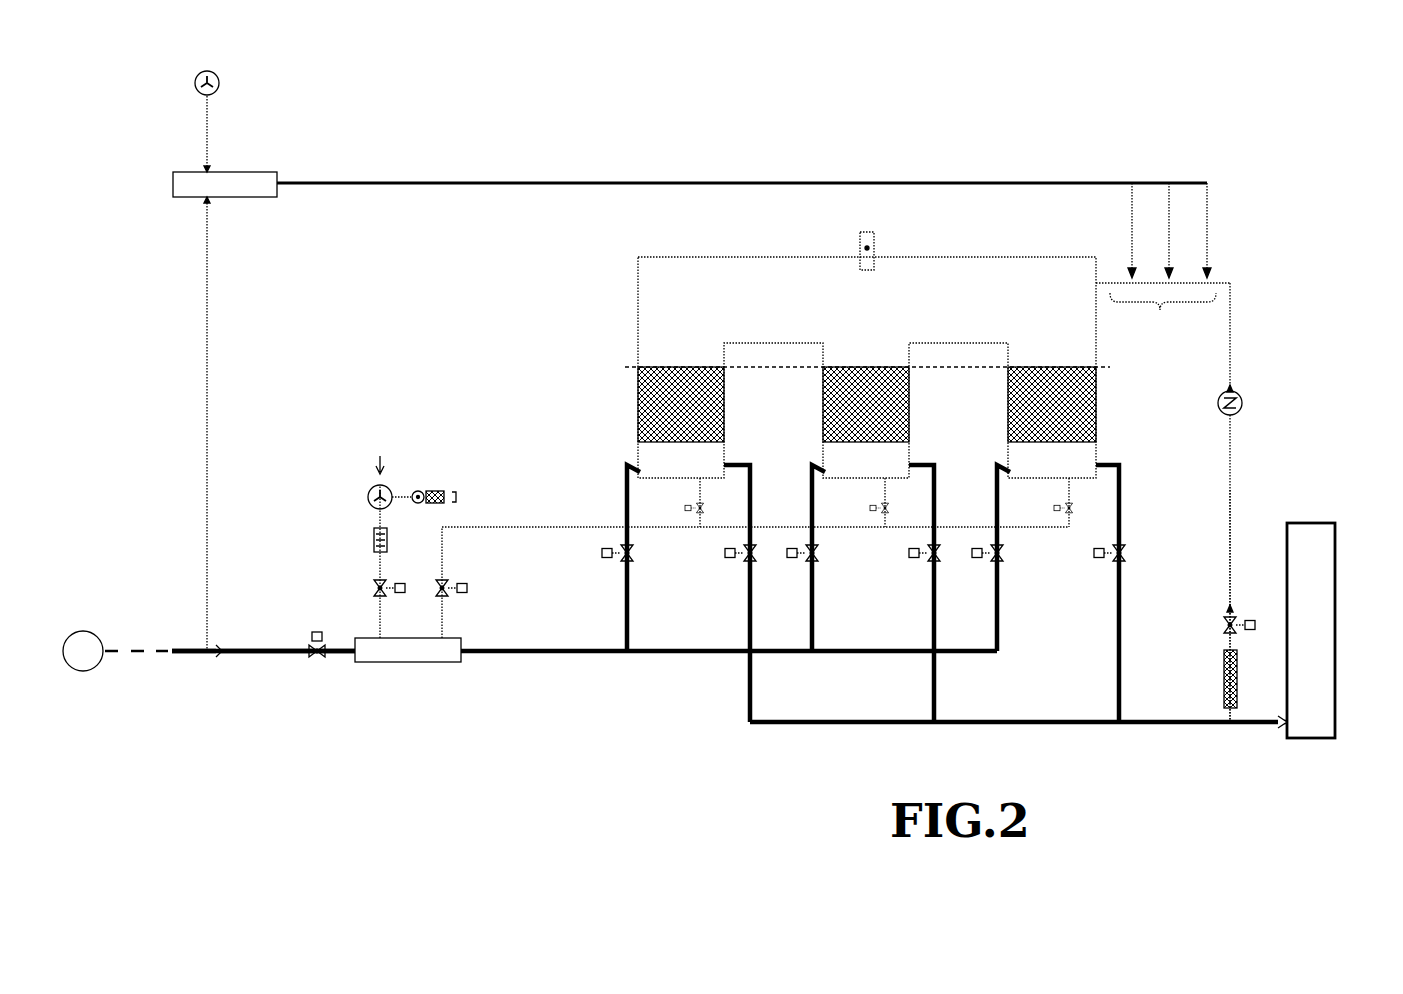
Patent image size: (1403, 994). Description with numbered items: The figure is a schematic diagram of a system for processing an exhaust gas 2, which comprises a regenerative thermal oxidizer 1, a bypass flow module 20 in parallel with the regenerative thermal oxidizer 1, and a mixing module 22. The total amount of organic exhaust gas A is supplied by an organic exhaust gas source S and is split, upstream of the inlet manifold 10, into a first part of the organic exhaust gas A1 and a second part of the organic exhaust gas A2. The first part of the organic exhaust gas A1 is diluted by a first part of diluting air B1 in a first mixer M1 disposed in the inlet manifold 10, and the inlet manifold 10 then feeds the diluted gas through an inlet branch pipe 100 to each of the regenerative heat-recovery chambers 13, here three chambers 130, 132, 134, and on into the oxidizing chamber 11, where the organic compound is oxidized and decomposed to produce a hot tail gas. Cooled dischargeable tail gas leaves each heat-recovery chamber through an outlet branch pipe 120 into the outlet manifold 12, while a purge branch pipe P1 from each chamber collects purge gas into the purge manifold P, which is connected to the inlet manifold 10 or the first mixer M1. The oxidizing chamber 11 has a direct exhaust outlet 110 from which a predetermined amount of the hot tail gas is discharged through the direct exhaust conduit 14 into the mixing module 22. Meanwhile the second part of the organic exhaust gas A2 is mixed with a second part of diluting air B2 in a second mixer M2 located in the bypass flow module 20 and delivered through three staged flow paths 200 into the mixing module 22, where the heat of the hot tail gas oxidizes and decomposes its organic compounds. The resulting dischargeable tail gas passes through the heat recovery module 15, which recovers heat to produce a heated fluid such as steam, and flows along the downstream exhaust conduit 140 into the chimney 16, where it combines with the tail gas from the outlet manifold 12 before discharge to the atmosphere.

The system for processing an exhaust gas 2 is at (1200, 98).
The regenerative thermal oxidizer 1 is at (436, 343).
The bypass flow module 20 is at (990, 180).
The staged flow paths 200 is at (1169, 230).
The oxidizing chamber 11 is at (943, 300).
The direct exhaust outlet 110 is at (1100, 287).
The mixing module 22 is at (1163, 323).
The regenerative heat-recovery chambers 13 is at (614, 383).
The first regenerative heat-recovery chamber 130 is at (636, 397).
The second regenerative heat-recovery chamber 132 is at (822, 397).
The third regenerative heat-recovery chamber 134 is at (1007, 388).
The direct exhaust conduit 14 is at (1232, 355).
The heat recovery module 15 is at (1243, 405).
The downstream exhaust conduit 140 is at (1228, 492).
The chimney 16 is at (1310, 675).
The inlet manifold 10 is at (530, 655).
The outlet manifold 12 is at (850, 725).
The inlet branch pipe 100 is at (818, 558).
The outlet branch pipe 120 is at (915, 593).
The purge branch pipe P1 is at (864, 502).
The purge manifold P is at (752, 570).
The first mixer M1 is at (430, 655).
The second mixer M2 is at (190, 195).
The first part of diluting air B1 is at (411, 532).
The second part of diluting air B2 is at (204, 102).
The total amount of organic exhaust gas A is at (260, 635).
The first part of organic exhaust gas A1 is at (263, 661).
The second part of organic exhaust gas A2 is at (187, 424).
The organic exhaust gas source S is at (115, 651).